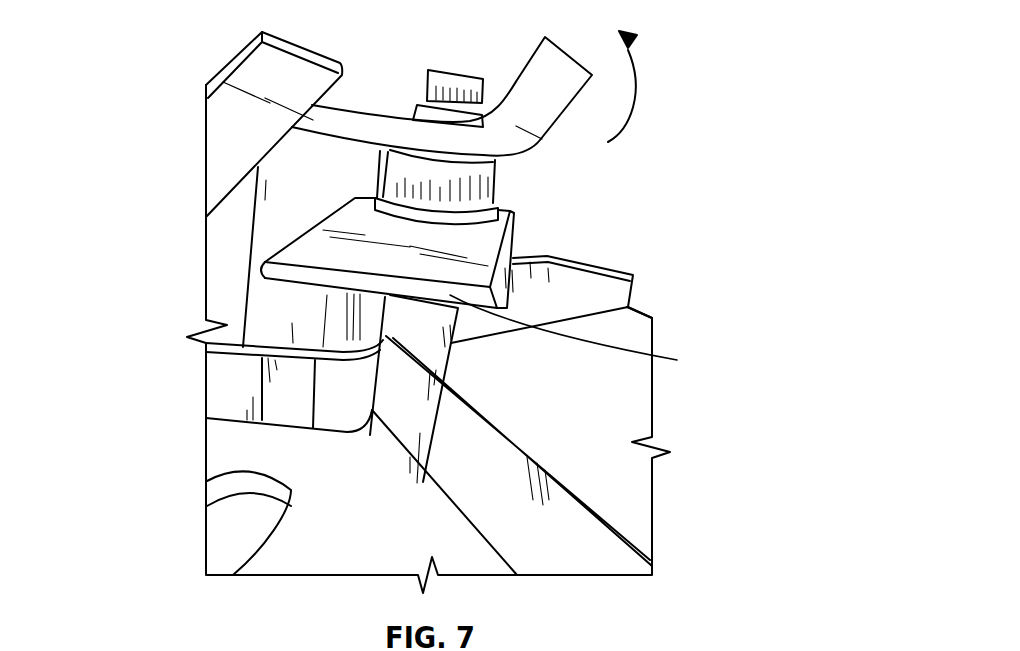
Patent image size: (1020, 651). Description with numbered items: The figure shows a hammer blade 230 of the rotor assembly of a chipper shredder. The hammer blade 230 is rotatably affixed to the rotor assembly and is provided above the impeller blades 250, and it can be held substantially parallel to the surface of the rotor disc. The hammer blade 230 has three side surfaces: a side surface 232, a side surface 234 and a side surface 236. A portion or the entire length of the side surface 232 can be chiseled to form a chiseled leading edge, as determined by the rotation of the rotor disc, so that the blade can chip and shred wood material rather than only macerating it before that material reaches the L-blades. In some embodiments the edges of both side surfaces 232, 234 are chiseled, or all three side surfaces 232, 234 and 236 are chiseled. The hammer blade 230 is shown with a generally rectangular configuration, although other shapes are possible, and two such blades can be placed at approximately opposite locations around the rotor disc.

The hammer blade 230 is at (495, 225).
The side surface 232 is at (513, 257).
The side surface 234 is at (283, 250).
The side surface 236 is at (589, 317).
The impeller blade 250 is at (523, 450).